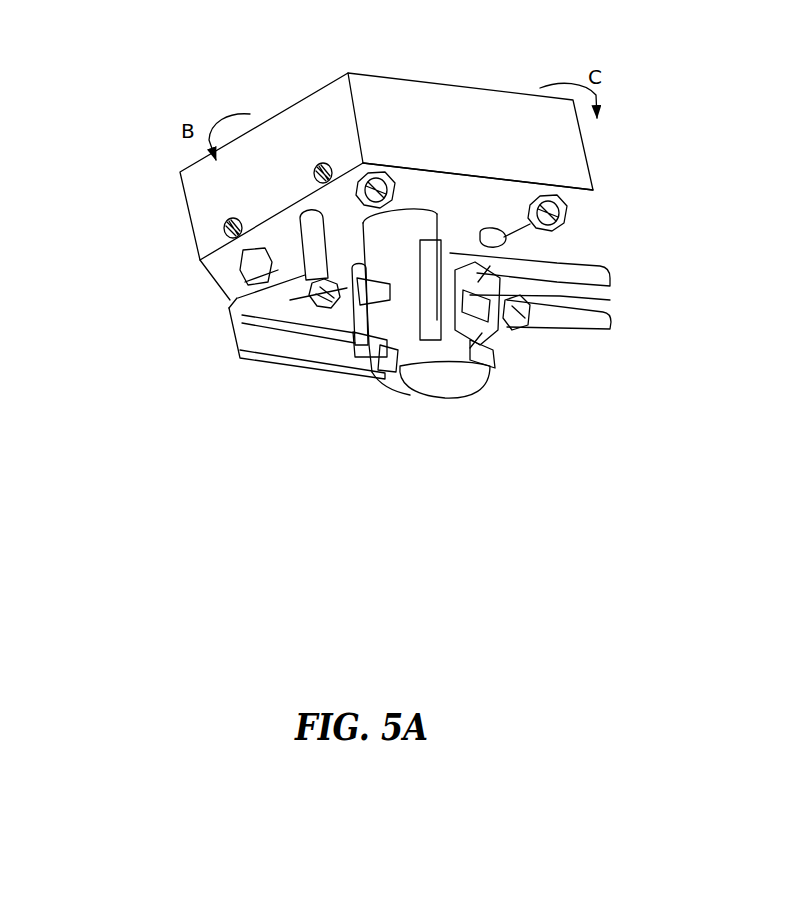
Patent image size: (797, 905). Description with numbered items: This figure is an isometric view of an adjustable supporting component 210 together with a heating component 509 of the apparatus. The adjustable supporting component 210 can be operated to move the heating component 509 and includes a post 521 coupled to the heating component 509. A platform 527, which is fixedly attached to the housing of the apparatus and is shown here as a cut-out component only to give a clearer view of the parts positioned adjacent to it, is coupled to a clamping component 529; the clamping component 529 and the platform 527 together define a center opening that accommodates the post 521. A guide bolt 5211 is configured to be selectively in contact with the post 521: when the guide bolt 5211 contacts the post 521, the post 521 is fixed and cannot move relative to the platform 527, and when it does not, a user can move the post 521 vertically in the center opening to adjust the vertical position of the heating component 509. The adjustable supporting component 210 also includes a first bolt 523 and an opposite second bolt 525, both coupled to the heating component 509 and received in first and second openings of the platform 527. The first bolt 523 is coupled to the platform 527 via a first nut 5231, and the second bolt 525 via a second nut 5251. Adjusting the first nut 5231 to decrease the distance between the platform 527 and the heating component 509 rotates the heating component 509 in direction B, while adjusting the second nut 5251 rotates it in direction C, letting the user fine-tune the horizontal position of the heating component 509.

The adjustable supporting component 210 is at (618, 217).
The heating component 509 is at (437, 128).
The post 521 is at (438, 380).
The guide bolt 5211 is at (470, 295).
The first bolt 523 is at (310, 304).
The first nut 5231 is at (317, 288).
The second bolt 525 is at (470, 327).
The second nut 5251 is at (510, 313).
The platform 527 is at (267, 333).
The clamping component 529 is at (390, 373).